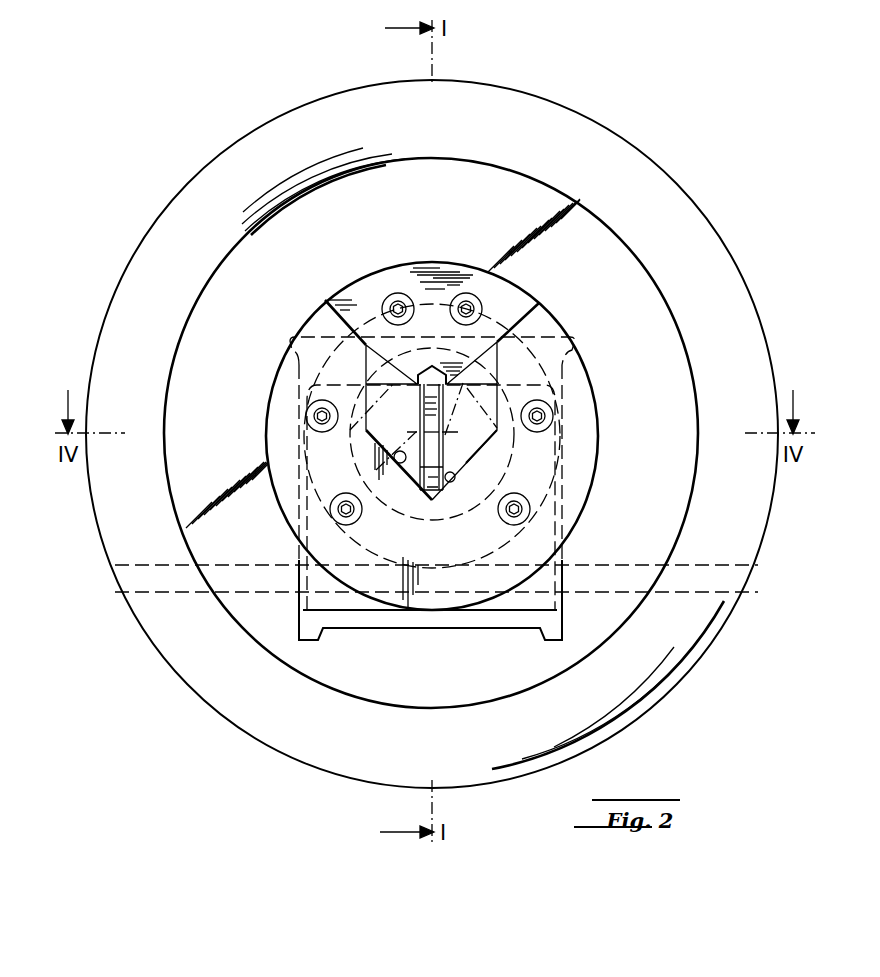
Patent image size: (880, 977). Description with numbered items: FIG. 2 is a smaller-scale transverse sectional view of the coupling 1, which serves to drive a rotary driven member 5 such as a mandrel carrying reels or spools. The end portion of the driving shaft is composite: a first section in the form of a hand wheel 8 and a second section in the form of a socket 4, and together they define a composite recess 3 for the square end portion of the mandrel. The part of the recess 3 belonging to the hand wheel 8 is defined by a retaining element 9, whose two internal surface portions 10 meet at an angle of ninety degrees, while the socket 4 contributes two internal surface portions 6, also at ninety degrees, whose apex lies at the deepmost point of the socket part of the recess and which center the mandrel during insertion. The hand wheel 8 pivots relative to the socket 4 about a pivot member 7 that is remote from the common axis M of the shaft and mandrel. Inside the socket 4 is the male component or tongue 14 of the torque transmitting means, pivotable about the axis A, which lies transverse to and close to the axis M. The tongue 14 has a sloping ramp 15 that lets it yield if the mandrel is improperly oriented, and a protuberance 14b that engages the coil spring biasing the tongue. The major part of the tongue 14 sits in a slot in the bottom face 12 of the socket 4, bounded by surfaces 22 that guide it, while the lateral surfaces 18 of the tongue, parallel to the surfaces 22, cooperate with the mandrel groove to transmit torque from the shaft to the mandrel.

The coupling 1 is at (611, 108).
The composite recess 3 is at (484, 396).
The socket 4 is at (318, 580).
The rotary driven member 5 is at (376, 428).
The internal surface portions 6 is at (388, 494).
The pivot member 7 is at (180, 596).
The hand wheel 8 is at (623, 168).
The retaining element 9 is at (513, 300).
The internal surface portions 10 is at (417, 381).
The bottom face 12 is at (364, 448).
The male component (tongue) 14 is at (419, 480).
The protuberance 14b is at (432, 502).
The ramp 15 is at (428, 452).
The lateral surfaces 18 is at (456, 440).
The slot surfaces 22 is at (420, 395).
The pivot axis of the tongue A is at (455, 433).
The common axis of the shaft and mandrel M is at (440, 477).